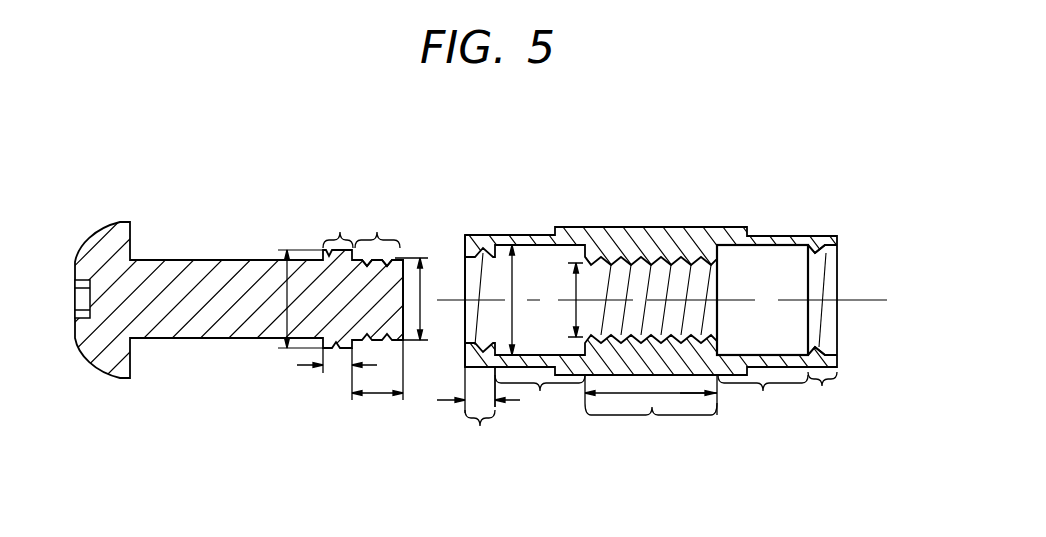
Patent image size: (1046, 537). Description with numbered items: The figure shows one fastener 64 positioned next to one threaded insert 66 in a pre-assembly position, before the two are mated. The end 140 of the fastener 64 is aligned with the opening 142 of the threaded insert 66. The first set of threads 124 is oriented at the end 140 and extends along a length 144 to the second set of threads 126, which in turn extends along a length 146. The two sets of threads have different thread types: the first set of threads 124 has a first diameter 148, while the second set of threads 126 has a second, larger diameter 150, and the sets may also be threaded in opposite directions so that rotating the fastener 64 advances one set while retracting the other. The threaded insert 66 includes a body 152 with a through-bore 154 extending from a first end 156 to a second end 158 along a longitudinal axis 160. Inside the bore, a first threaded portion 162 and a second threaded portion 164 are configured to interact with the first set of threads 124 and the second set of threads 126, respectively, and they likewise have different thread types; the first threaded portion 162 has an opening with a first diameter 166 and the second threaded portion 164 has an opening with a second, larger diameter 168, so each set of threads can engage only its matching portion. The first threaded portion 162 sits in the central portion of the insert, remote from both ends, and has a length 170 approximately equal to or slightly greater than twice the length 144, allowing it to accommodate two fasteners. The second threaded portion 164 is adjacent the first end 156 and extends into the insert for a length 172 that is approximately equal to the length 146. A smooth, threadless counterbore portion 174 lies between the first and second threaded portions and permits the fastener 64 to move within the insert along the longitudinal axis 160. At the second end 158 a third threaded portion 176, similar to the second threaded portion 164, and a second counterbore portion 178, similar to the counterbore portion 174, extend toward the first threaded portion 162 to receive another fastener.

The fastener 64 is at (113, 358).
The threaded insert 66 is at (613, 227).
The first set of threads 124 is at (377, 232).
The second set of threads 126 is at (340, 233).
The end 140 is at (411, 248).
The opening 142 is at (435, 255).
The length 144 is at (377, 396).
The length 146 is at (297, 365).
The first diameter 148 is at (407, 310).
The second diameter 150 is at (287, 297).
The body 152 is at (652, 257).
The through-bore 154 is at (735, 273).
The first end 156 is at (465, 268).
The second end 158 is at (840, 245).
The longitudinal axis 160 is at (858, 303).
The first threaded portion 162 is at (652, 407).
The second threaded portion 164 is at (480, 426).
The first diameter 166 is at (575, 285).
The second diameter 168 is at (530, 263).
The length 170 is at (697, 395).
The length 172 is at (480, 426).
The counterbore portion 174 is at (540, 391).
The third threaded portion 176 is at (822, 386).
The second counterbore portion 178 is at (763, 391).